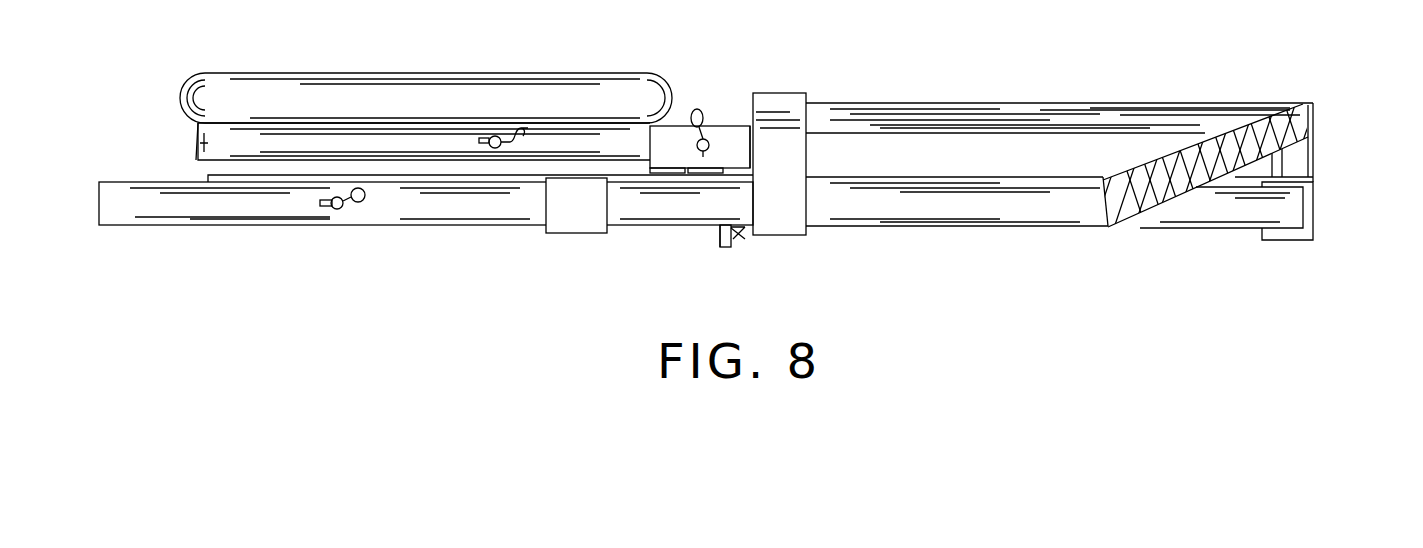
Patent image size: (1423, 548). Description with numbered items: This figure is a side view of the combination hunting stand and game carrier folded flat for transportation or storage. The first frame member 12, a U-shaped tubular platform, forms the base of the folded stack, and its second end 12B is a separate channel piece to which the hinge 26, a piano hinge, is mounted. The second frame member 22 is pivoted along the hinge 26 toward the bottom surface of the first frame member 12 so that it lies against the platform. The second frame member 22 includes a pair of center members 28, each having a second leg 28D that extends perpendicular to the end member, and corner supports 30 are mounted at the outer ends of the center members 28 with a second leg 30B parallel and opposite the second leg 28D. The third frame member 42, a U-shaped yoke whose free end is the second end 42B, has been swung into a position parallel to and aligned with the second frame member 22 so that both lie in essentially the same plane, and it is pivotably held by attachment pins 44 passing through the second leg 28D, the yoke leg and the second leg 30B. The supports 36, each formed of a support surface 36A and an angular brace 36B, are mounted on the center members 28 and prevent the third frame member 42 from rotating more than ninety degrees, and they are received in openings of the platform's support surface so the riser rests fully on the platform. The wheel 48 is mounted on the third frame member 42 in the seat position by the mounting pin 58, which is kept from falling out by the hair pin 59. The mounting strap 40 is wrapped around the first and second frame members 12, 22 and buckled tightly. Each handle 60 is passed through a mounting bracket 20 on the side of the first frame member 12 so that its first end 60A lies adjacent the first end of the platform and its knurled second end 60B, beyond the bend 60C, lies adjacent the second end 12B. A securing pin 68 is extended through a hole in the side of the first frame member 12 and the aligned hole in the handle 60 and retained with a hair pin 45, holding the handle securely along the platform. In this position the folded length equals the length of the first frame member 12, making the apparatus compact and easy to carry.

The first frame member 12 is at (1175, 215).
The second end of first frame member 12B is at (1292, 225).
The mounting brackets 20 is at (562, 222).
The second frame member 22 is at (1022, 110).
The hinge 26 is at (1316, 174).
The center members 28 is at (920, 118).
The second leg of center member 28D is at (1085, 120).
The corner supports 30 is at (725, 125).
The second leg of corner support 30B is at (745, 128).
The supports 36 is at (727, 248).
The support surface 36A is at (721, 232).
The angular brace 36B is at (740, 230).
The mounting strap 40 is at (808, 97).
The third frame member 42 is at (283, 128).
The second end of third frame member 42B is at (198, 148).
The attachment pins 44 is at (692, 112).
The hair pin 45 is at (366, 199).
The wheel 48 is at (333, 90).
The mounting pin 58 is at (494, 135).
The hair pin 59 is at (522, 127).
The handles 60 is at (968, 212).
The first end of handle 60A is at (113, 212).
The second end of handle 60B is at (1300, 108).
The bend 60C is at (1103, 228).
The securing pins 68 is at (337, 210).